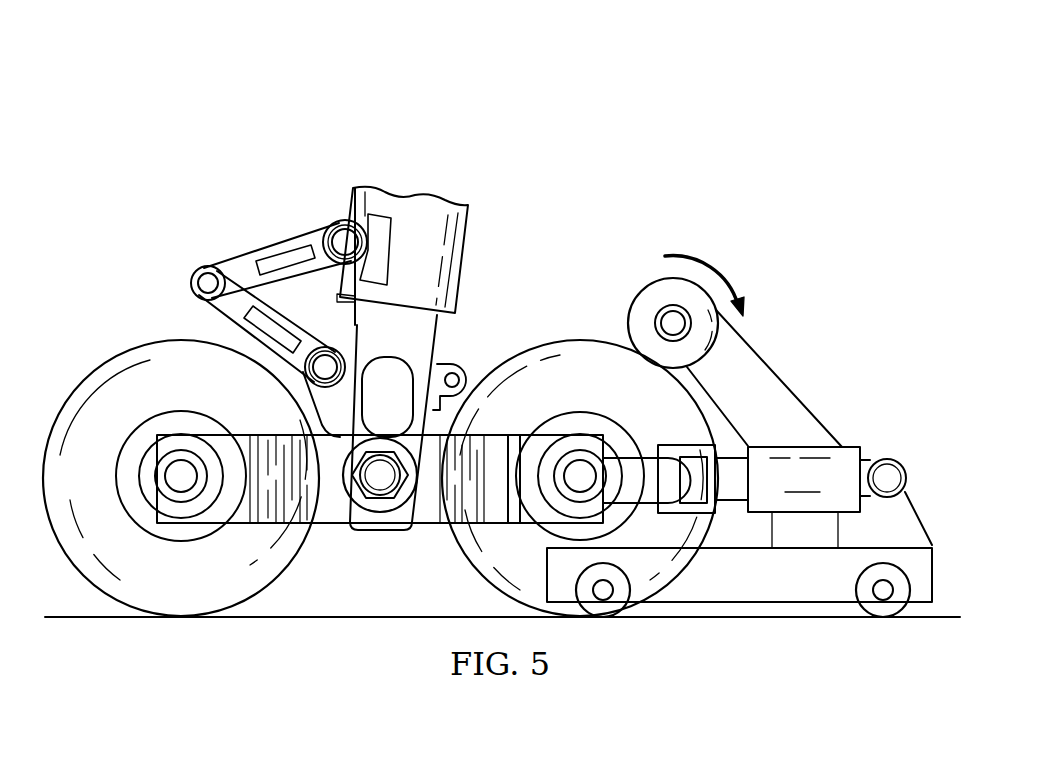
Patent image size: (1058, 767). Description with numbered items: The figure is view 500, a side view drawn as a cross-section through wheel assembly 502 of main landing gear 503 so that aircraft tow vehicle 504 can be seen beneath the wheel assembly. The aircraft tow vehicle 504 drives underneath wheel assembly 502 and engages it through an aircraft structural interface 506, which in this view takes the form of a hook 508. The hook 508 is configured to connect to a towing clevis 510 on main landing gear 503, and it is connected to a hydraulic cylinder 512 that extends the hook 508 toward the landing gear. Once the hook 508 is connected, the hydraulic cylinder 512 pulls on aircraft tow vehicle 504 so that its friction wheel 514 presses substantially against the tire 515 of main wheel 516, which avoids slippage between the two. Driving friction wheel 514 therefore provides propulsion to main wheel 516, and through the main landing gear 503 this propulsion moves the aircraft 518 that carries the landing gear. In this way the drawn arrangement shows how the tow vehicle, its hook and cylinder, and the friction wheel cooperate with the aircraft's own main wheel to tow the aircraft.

The view 500 is at (705, 95).
The wheel assembly 502 is at (504, 271).
The main landing gear 503 is at (254, 219).
The aircraft tow vehicle 504 is at (843, 343).
The aircraft structural interface 506 is at (628, 418).
The hook 508 is at (668, 445).
The towing clevis 510 is at (647, 505).
The hydraulic cylinder 512 is at (820, 446).
The friction wheel 514 is at (652, 283).
The tire 515 is at (568, 341).
The main wheel 516 is at (526, 383).
The aircraft 518 is at (136, 162).